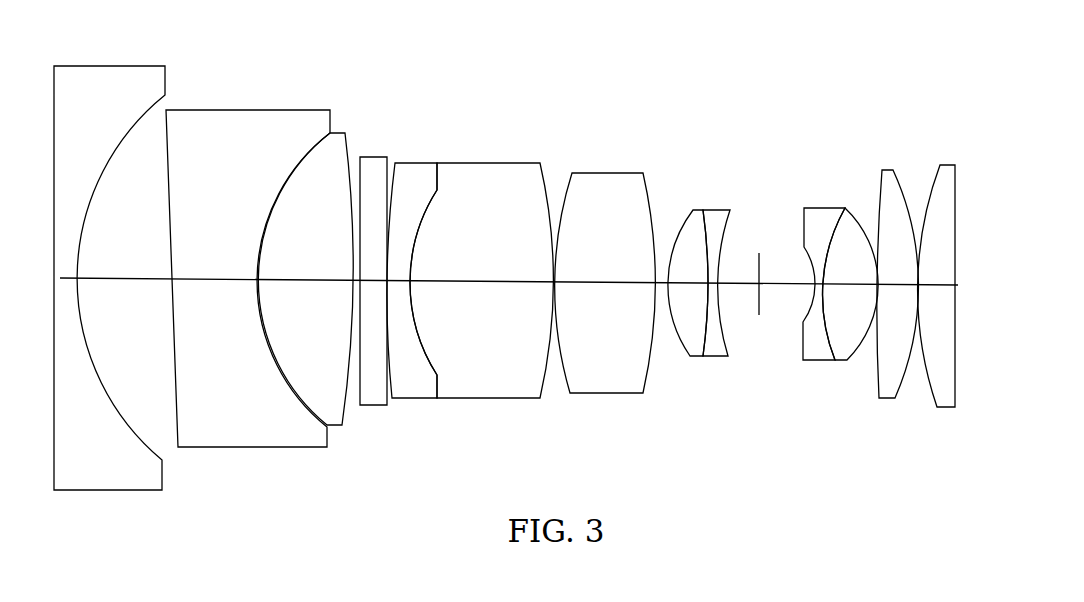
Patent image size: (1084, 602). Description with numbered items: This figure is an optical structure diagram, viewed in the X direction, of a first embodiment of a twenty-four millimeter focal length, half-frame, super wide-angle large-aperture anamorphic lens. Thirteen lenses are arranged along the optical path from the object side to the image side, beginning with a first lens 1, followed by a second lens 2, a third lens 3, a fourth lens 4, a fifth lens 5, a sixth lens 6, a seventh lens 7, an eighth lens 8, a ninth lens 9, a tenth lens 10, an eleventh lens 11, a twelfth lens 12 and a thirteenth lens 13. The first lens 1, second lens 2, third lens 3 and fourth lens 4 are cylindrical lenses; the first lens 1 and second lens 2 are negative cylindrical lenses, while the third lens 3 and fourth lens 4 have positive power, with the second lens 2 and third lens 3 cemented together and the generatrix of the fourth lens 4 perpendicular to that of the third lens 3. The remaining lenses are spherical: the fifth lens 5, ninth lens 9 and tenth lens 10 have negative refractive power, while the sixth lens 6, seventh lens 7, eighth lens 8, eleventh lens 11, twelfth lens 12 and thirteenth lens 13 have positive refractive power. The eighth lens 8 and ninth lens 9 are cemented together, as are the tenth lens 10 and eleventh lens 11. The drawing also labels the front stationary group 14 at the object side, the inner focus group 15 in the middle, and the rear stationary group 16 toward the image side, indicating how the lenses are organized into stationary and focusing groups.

The first lens 1 is at (95, 75).
The second lens 2 is at (240, 125).
The third lens 3 is at (337, 147).
The fourth lens 4 is at (372, 163).
The fifth lens 5 is at (411, 177).
The sixth lens 6 is at (483, 177).
The seventh lens 7 is at (603, 183).
The eighth lens 8 is at (693, 220).
The ninth lens 9 is at (718, 217).
The tenth lens 10 is at (819, 218).
The eleventh lens 11 is at (848, 222).
The twelfth lens 12 is at (888, 190).
The thirteenth lens 13 is at (942, 187).
The front stationary group 14 is at (99, 478).
The inner focus group 15 is at (495, 418).
The rear stationary group 16 is at (615, 408).